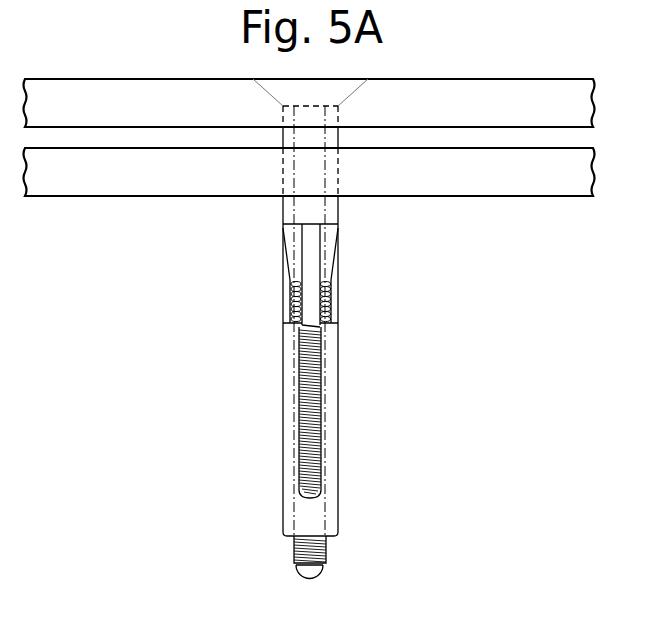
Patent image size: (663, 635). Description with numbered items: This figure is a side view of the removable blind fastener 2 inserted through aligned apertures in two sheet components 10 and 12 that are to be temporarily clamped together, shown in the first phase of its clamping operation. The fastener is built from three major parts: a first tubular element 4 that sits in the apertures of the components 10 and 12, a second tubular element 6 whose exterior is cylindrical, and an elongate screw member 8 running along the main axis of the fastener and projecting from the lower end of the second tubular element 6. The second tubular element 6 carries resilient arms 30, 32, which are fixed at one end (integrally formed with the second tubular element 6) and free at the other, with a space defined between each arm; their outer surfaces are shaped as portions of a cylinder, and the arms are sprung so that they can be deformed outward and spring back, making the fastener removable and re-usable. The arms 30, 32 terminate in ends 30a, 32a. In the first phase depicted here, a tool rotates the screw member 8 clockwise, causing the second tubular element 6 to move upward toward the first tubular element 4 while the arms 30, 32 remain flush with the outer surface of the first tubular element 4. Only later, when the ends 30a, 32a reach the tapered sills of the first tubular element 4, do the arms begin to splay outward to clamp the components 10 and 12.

The removable blind fastener 2 is at (183, 419).
The first tubular element 4 is at (340, 213).
The second tubular element 6 is at (338, 487).
The elongate screw member 8 is at (294, 545).
The sheet material component 10 is at (547, 79).
The sheet material component 12 is at (548, 196).
The arm 30 is at (283, 378).
The end of arm 30a is at (283, 320).
The arm 32 is at (338, 368).
The end of arm 32a is at (338, 312).